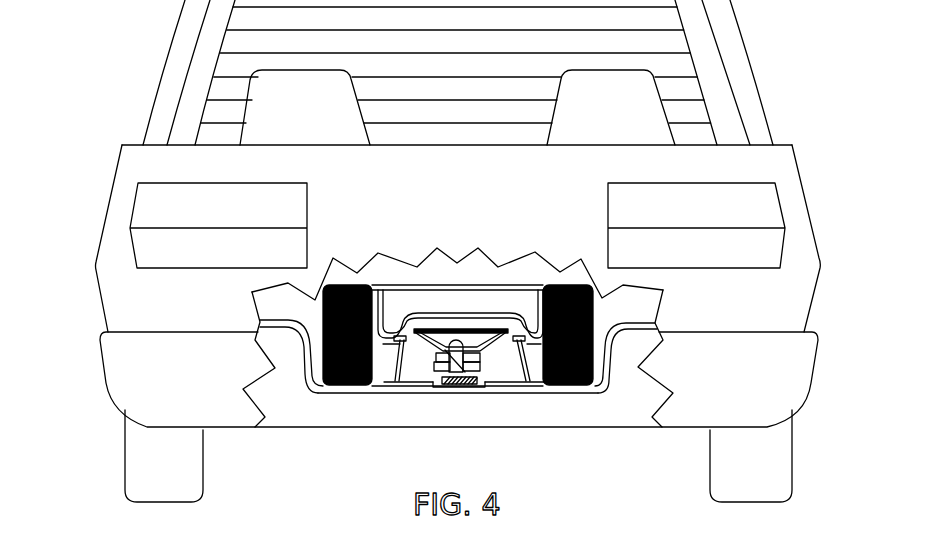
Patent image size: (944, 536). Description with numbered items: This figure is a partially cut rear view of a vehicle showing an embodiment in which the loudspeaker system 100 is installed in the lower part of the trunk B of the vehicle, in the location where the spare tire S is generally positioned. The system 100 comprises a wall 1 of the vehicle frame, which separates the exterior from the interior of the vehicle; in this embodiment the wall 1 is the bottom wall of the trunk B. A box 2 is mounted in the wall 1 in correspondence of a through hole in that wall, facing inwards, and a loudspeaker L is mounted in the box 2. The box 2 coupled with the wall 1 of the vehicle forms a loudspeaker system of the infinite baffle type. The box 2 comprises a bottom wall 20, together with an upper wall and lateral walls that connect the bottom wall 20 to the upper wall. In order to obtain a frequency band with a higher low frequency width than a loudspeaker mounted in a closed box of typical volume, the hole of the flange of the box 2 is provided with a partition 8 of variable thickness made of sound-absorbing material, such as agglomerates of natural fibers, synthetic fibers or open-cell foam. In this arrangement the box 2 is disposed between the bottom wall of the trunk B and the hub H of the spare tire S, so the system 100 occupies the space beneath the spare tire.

The hub of the spare tire H is at (410, 316).
The loudspeaker L is at (469, 328).
The trunk B is at (313, 338).
The spare tire S is at (598, 334).
The system 100 is at (392, 358).
The wall 1 is at (403, 388).
The box 2 is at (533, 355).
The partition 8 is at (448, 388).
The bottom wall 20 is at (477, 390).